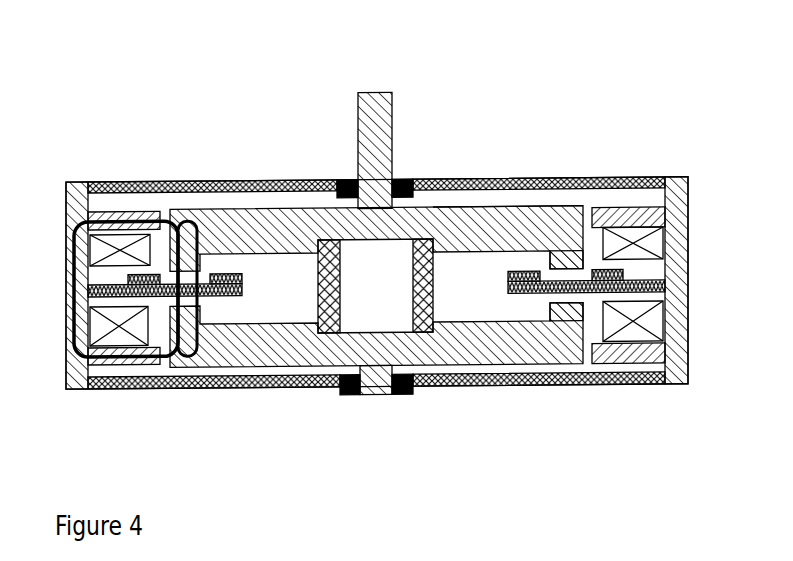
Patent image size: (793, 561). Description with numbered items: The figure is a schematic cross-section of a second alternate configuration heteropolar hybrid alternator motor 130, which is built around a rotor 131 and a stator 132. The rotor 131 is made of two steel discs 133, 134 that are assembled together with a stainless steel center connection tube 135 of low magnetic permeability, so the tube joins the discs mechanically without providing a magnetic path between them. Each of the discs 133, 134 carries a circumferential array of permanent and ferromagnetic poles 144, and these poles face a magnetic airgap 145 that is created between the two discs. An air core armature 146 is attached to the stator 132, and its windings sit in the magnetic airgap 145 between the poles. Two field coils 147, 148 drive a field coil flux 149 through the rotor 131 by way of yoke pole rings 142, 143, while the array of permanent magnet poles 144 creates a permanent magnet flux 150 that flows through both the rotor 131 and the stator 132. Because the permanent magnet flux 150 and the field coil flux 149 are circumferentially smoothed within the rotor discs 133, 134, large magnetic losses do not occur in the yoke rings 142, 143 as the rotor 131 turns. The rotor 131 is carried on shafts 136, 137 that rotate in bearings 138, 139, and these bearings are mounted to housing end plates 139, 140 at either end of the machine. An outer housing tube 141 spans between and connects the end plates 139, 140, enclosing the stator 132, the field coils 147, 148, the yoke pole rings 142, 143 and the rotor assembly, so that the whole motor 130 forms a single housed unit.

The heteropolar hybrid alternator motor 130 is at (107, 47).
The rotor 131 is at (478, 202).
The stator 132 is at (694, 198).
The steel disc 133 is at (549, 207).
The steel disc 134 is at (512, 366).
The center connection tube 135 is at (341, 289).
The shaft 136 is at (394, 140).
The shaft 137 is at (377, 398).
The bearing 138 is at (344, 180).
The bearing / housing end plate 139 is at (619, 178).
The housing end plate 140 is at (276, 390).
The outer housing tube 141 is at (66, 185).
The yoke pole ring 142 is at (616, 366).
The yoke pole ring 143 is at (641, 206).
The permanent and ferromagnetic poles 144 is at (549, 304).
The magnetic airgap 145 is at (538, 263).
The air core armature 146 is at (637, 278).
The field coil 147 is at (658, 244).
The field coil 148 is at (660, 322).
The field coil flux 149 is at (72, 269).
The permanent magnet flux 150 is at (174, 358).